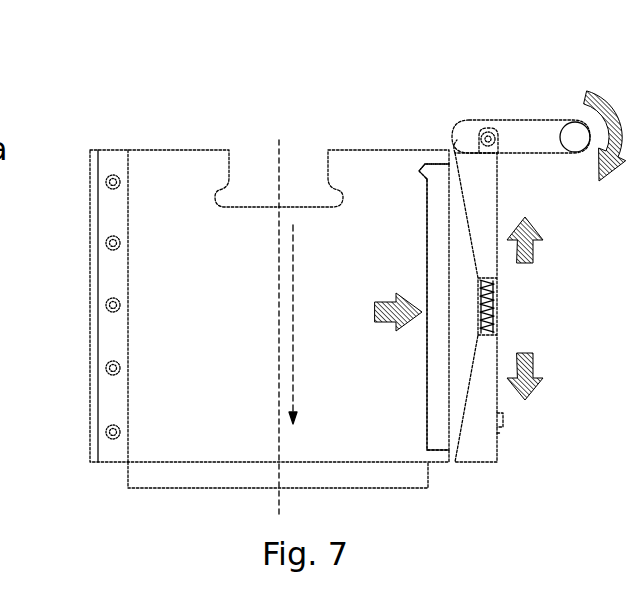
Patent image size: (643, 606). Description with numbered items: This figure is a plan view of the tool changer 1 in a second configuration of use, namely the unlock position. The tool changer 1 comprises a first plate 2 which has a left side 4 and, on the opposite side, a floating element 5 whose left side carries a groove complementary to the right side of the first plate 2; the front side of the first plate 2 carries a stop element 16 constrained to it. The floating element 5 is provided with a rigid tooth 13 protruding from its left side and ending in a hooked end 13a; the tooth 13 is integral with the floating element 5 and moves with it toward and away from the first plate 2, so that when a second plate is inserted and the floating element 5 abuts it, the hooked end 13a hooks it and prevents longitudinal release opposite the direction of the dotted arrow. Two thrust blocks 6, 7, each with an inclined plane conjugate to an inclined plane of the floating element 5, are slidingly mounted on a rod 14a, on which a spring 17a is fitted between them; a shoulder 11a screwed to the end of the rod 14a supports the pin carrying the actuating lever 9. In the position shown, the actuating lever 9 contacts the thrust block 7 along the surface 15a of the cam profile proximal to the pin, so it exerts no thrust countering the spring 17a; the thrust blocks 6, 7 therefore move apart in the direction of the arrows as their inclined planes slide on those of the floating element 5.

The tool changer 1 is at (152, 141).
The first plate 2 is at (165, 436).
The left side 4 is at (109, 261).
The floating element 5 is at (443, 417).
The thrust block 6 is at (490, 435).
The thrust block 7 is at (480, 202).
The actuating lever 9 is at (524, 135).
The shoulder 11a is at (490, 150).
The rigid tooth 13 is at (421, 175).
The hooked end 13a is at (421, 178).
The rod 14a is at (493, 295).
The surface 15a is at (467, 150).
The stop element 16 is at (233, 473).
The spring 17a is at (493, 325).